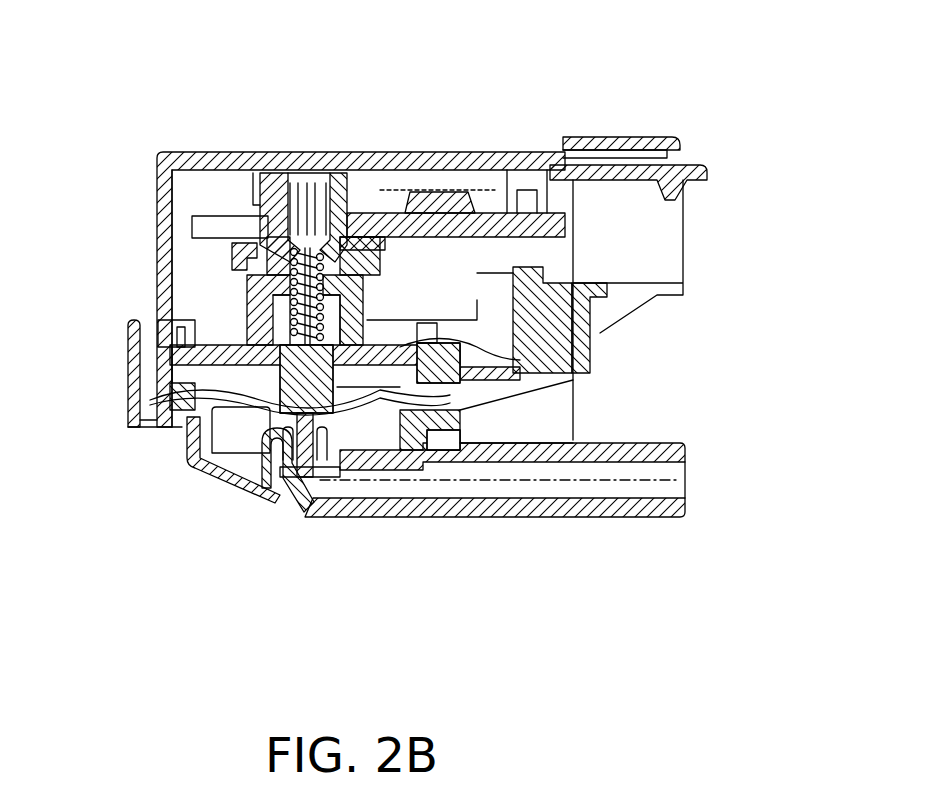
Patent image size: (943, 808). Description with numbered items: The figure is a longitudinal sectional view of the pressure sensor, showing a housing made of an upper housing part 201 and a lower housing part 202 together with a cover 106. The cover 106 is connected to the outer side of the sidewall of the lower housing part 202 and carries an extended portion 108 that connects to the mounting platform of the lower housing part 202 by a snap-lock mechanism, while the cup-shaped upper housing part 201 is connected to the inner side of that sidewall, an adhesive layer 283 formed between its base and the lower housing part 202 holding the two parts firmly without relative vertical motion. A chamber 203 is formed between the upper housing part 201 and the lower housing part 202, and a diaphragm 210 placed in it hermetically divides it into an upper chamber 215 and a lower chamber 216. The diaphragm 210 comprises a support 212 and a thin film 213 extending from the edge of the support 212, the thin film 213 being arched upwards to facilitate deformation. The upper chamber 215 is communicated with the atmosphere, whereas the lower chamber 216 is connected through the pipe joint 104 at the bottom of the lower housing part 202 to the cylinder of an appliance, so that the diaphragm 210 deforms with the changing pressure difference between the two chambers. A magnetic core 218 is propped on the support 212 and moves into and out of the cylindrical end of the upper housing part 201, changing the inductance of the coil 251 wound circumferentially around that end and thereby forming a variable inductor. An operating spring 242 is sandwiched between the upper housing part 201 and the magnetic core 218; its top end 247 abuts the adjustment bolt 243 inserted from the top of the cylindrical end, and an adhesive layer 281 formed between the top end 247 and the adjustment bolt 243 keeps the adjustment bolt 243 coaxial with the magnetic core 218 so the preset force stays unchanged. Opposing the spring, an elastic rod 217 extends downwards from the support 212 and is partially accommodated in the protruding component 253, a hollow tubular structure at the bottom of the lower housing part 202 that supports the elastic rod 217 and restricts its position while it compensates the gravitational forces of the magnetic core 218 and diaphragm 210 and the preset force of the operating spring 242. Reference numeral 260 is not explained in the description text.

The pipe joint 104 is at (493, 507).
The cover 106 is at (157, 162).
The extended portion 108 is at (538, 162).
The upper housing part 201 is at (190, 360).
The lower housing part 202 is at (122, 420).
The chamber 203 is at (762, 340).
The diaphragm 210 is at (255, 552).
The support 212 is at (277, 483).
The thin film 213 is at (197, 467).
The upper chamber 215 is at (540, 375).
The lower chamber 216 is at (470, 415).
The elastic rod 217 is at (318, 478).
The magnetic core 218 is at (160, 347).
The operating spring 242 is at (250, 330).
The adjustment bolt 243 is at (257, 207).
The top end 247 is at (250, 232).
The coil 251 is at (250, 293).
The protruding component 253 is at (345, 478).
The valve body plate 260 is at (490, 228).
The adhesive layer 281 is at (292, 210).
The adhesive layer 283 is at (190, 400).